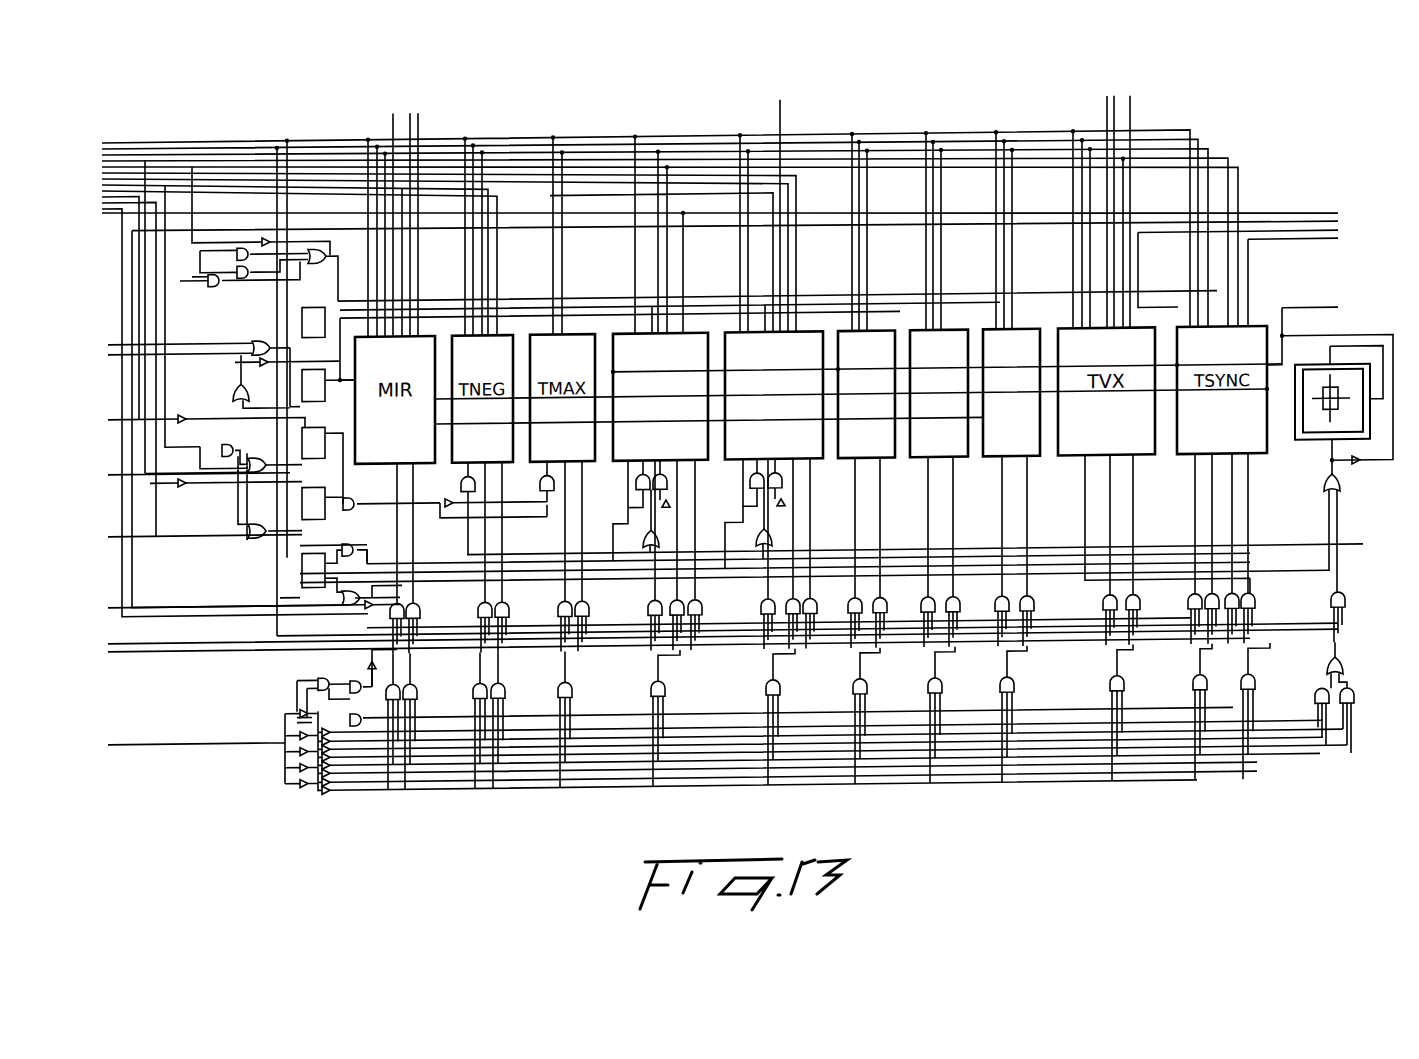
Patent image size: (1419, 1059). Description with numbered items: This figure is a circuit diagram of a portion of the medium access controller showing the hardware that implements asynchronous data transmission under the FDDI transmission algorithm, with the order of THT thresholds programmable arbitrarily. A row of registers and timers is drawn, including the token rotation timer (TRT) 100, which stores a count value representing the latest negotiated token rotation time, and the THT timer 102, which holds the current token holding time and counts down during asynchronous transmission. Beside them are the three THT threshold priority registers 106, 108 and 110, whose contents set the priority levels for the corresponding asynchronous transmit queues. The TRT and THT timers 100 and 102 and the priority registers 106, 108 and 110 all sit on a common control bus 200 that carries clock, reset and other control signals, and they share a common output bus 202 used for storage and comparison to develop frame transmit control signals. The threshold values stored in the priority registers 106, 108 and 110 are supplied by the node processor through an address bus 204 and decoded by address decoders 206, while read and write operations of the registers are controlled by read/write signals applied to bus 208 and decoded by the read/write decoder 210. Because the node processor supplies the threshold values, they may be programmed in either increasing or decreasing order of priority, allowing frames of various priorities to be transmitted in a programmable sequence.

The token rotation timer (TRT) 100 is at (683, 340).
The THT timer 102 is at (805, 340).
The priority register 106 is at (888, 342).
The priority register 108 is at (961, 342).
The priority register 110 is at (1032, 342).
The control bus 200 is at (892, 122).
The output bus 202 is at (1291, 211).
The address bus 204 is at (182, 749).
The address decoders 206 is at (728, 710).
The read/write bus 208 is at (205, 646).
The read/write decoder 210 is at (848, 591).